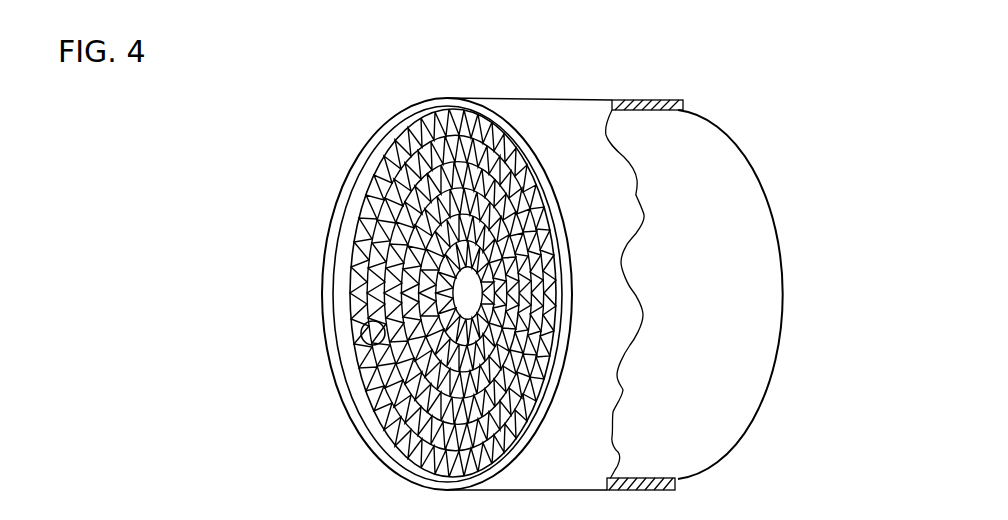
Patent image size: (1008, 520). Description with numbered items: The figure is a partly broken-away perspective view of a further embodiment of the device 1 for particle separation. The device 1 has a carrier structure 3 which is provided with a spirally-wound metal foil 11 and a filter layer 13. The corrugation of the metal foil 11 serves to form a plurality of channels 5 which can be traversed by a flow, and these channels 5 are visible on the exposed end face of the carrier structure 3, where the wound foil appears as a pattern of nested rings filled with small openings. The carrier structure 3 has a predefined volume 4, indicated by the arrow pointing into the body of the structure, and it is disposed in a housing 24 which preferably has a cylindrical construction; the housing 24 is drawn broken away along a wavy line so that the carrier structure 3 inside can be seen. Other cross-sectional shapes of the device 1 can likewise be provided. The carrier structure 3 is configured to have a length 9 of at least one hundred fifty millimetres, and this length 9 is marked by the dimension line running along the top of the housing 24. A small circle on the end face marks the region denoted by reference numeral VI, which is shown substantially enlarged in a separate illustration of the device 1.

The device 1 is at (193, 237).
The carrier structure 3 is at (708, 153).
The predefined volume 4 is at (722, 248).
The channels 5 is at (373, 220).
The length 9 is at (683, 45).
The spirally-wound metal foil 11 is at (378, 440).
The filter layer 13 is at (375, 390).
The housing 24 is at (403, 118).
The region denoted VI is at (361, 331).